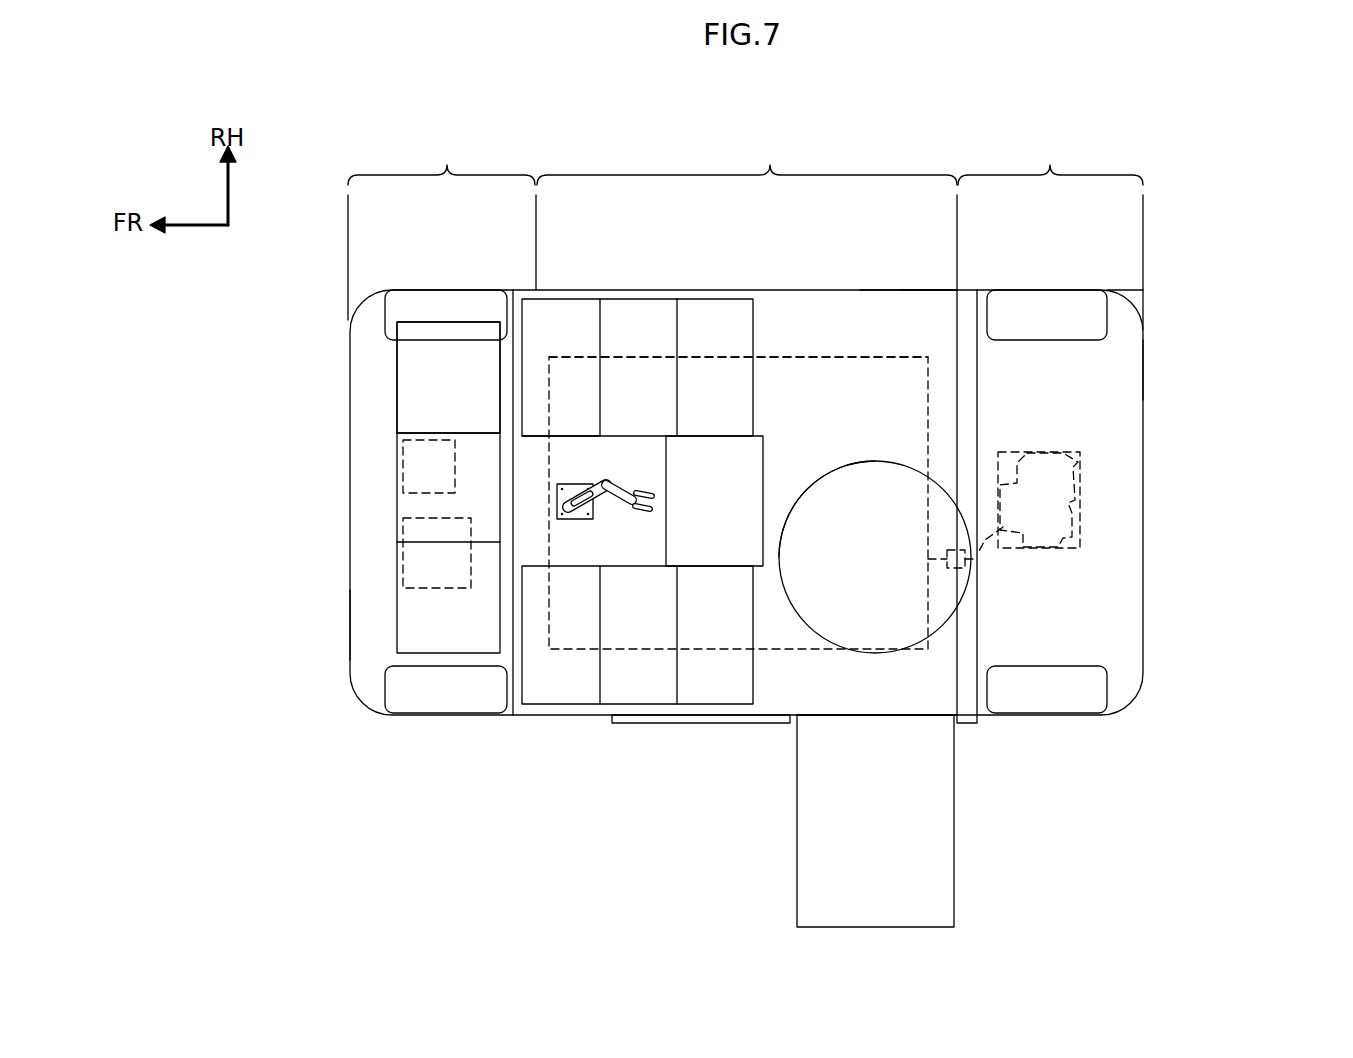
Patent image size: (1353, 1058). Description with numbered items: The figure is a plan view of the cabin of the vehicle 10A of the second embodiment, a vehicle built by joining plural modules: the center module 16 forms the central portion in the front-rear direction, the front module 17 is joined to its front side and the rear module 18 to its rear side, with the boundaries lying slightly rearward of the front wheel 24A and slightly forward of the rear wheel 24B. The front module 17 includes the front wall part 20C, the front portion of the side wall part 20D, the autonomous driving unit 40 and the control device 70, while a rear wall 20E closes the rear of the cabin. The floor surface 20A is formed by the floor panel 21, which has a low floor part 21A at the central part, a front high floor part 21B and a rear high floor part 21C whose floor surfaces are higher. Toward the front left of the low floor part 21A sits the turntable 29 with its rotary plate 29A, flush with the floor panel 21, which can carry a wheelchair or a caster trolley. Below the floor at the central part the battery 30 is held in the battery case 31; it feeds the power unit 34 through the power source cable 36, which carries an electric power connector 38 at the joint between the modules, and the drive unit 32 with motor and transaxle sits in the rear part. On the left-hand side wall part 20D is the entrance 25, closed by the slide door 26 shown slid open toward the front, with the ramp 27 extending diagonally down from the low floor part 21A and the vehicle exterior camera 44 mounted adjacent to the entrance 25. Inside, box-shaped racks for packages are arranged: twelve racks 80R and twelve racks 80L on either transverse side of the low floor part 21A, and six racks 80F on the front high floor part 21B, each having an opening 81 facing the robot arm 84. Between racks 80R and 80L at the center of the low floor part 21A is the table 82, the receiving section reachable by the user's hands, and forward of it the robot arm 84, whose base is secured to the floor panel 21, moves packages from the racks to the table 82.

The vehicle 10A is at (1160, 283).
The center module 16 is at (747, 210).
The front module 17 is at (442, 225).
The rear module 18 is at (1050, 230).
The floor surface 20A is at (877, 665).
The front wall part 20C is at (352, 636).
The side wall part 20D is at (928, 292).
The rear wall 20E is at (1143, 366).
The floor panel 21 is at (895, 313).
The low floor part 21A is at (832, 685).
The front high floor part 21B is at (358, 408).
The rear high floor part 21C is at (1083, 362).
The front wheel 24A is at (435, 706).
The rear wheel 24B is at (1055, 707).
The entrance 25 is at (930, 710).
The slide door 26 is at (678, 722).
The ramp 27 is at (805, 915).
The turntable 29 is at (803, 484).
The rotary plate 29A is at (847, 497).
The battery 30 is at (847, 370).
The battery case 31 is at (828, 353).
The drive unit 32 is at (1042, 493).
The power unit 34 is at (1078, 458).
The power source cable 36 is at (980, 556).
The electric power connector 38 is at (945, 549).
The autonomous driving unit 40 is at (412, 560).
The vehicle exterior camera 44 is at (975, 725).
The control device 70 is at (412, 462).
The rack 80F is at (420, 380).
The rack 80R is at (706, 320).
The rack 80L is at (718, 677).
The opening 81 is at (573, 444).
The table 82 is at (694, 537).
The robot arm 84 is at (623, 492).